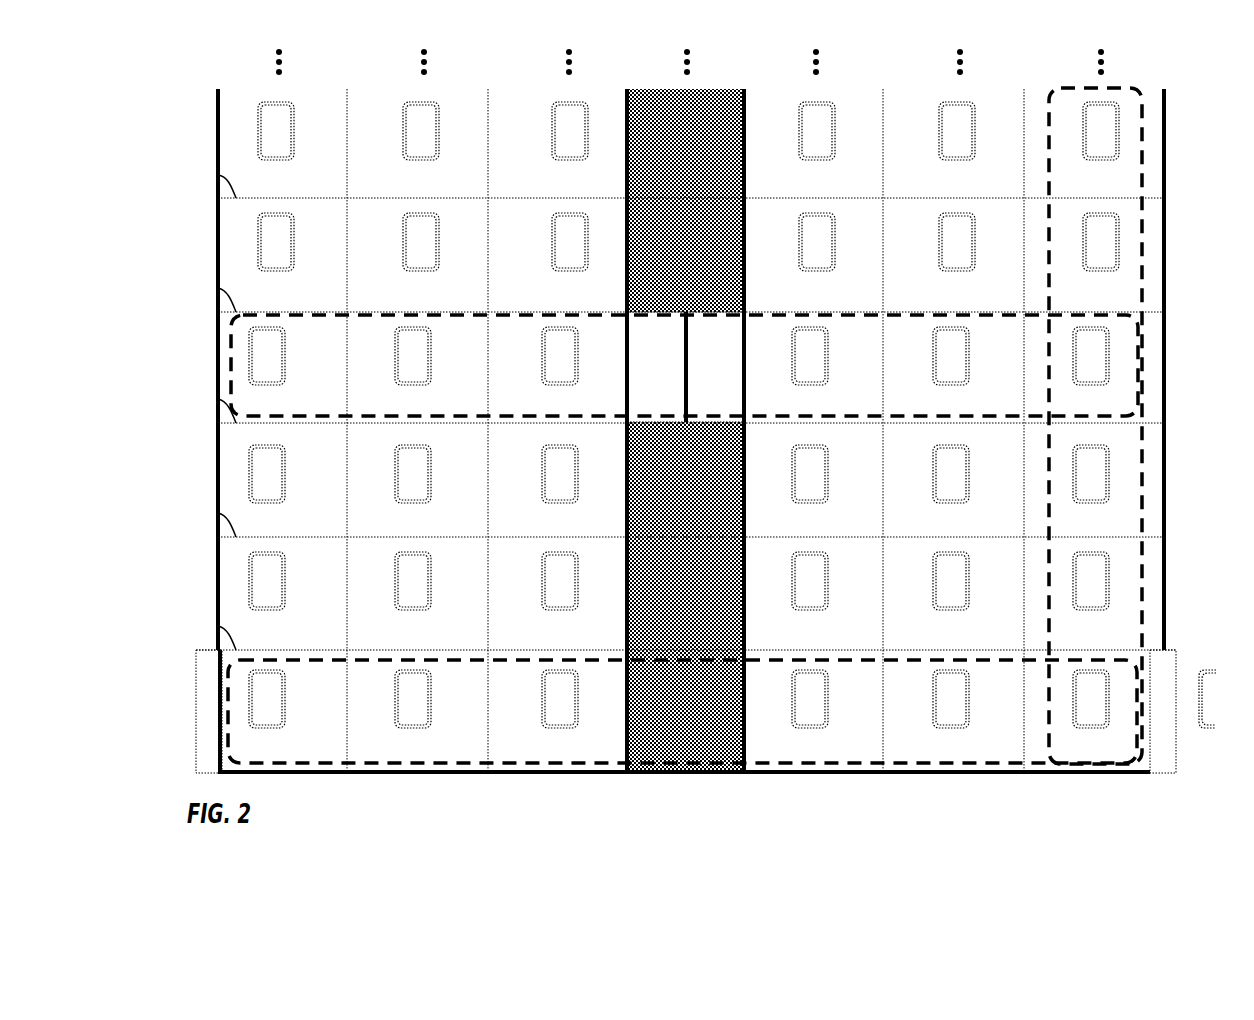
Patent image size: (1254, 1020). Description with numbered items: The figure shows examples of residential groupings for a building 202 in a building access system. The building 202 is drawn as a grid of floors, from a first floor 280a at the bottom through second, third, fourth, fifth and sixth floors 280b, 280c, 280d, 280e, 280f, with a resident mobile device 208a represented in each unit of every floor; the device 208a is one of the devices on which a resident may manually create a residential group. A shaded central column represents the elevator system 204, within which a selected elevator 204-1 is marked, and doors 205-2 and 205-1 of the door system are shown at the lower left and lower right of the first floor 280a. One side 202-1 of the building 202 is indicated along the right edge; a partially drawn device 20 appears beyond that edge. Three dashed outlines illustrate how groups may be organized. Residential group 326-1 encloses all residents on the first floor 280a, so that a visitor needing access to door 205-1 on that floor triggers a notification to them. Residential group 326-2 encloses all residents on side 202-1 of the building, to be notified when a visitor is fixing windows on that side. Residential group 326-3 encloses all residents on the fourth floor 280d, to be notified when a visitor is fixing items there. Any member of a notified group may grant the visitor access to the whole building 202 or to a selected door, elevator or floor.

The building 202 is at (216, 96).
The side of the building 202-1 is at (1166, 130).
The elevator system 204 is at (730, 84).
The selected elevator 204-1 is at (732, 382).
The door 205-1 is at (1167, 784).
The door 205-2 is at (209, 768).
The resident mobile device 208a is at (684, 430).
The first floor 280a is at (380, 770).
The second floor 280b is at (216, 625).
The third floor 280c is at (216, 512).
The fourth floor 280d is at (216, 398).
The fifth floor 280e is at (216, 287).
The sixth floor 280f is at (216, 174).
The residential group 326-1 is at (503, 775).
The residential group 326-2 is at (1144, 500).
The residential group 326-3 is at (1136, 414).
The partial memory cell at page edge 20 is at (1217, 722).